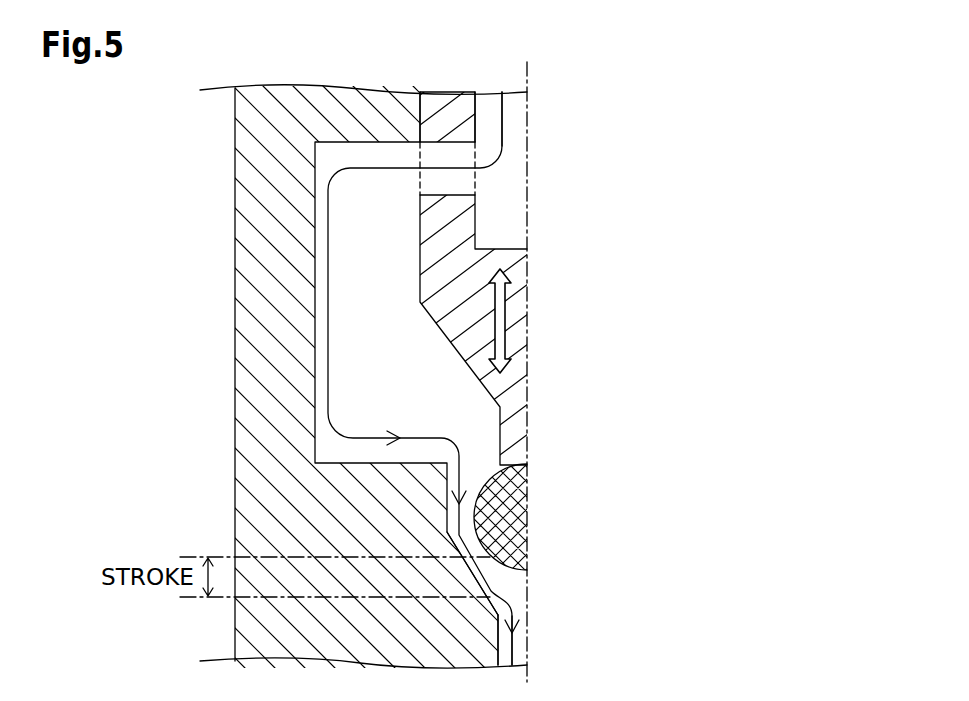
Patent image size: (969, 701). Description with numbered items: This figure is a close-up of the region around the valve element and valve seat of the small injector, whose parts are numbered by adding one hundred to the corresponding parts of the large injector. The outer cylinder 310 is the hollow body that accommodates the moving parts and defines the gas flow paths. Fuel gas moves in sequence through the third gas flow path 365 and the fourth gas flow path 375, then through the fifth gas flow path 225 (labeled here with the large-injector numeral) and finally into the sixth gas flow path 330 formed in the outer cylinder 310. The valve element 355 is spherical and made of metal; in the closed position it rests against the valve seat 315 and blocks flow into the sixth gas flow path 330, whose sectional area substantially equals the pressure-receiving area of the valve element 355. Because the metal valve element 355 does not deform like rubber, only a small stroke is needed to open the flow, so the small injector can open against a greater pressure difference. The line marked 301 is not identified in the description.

The central axis 301 is at (527, 74).
The outer cylinder 310 is at (247, 195).
The fifth gas flow path 225 is at (357, 280).
The fourth gas flow path 375 is at (458, 182).
The third gas flow path 365 is at (515, 115).
The valve element 355 is at (517, 515).
The valve seat 315 is at (493, 593).
The sixth gas flow path 330 is at (507, 650).